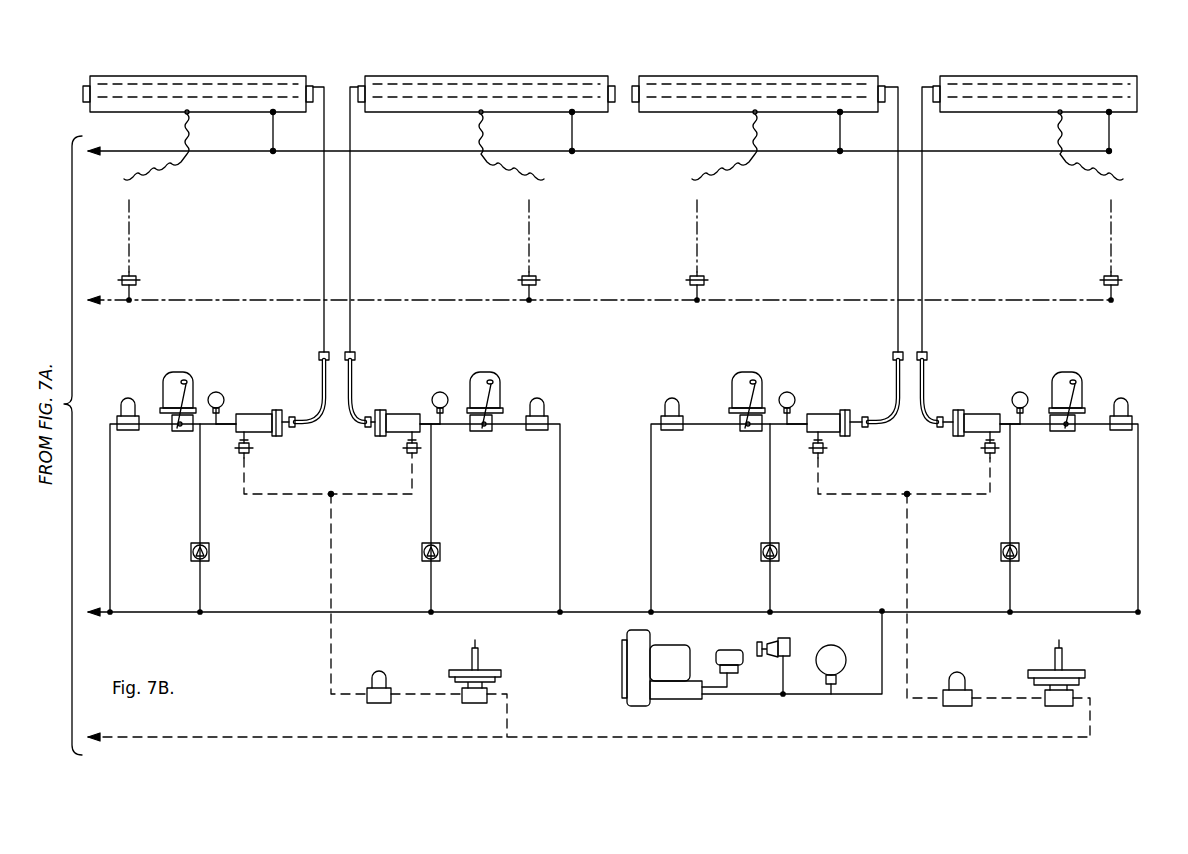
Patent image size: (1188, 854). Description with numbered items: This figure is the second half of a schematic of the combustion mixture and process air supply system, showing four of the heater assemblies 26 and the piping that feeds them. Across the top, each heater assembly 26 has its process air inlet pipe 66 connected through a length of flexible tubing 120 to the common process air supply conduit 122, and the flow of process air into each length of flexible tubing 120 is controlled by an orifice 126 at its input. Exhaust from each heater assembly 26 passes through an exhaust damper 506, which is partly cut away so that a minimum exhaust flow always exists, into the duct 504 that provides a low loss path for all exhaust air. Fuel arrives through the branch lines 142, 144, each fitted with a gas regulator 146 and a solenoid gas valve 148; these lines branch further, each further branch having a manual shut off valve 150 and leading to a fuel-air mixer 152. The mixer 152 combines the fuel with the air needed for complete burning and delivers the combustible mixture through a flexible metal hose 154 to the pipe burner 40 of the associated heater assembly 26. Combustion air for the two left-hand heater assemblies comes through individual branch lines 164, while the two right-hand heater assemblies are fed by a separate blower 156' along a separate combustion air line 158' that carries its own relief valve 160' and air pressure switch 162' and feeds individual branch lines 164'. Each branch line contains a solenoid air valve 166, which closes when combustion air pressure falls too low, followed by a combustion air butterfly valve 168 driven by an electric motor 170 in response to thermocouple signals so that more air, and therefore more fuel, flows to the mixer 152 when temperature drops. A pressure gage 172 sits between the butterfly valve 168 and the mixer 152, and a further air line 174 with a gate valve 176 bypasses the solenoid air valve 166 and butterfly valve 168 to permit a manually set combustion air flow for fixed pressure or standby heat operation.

The heater assembly 26 is at (246, 76).
The pipe burner 40 is at (360, 80).
The process air inlet pipe 66 is at (187, 113).
The exhaust damper 506 is at (273, 130).
The duct 504 is at (305, 155).
The flexible tubing 120 is at (172, 178).
The orifice 126 is at (137, 280).
The process air supply conduit 122 is at (292, 300).
The flexible metal hose 154 is at (360, 420).
The fuel-air mixer 152 is at (254, 413).
The manual shut off valve 150 is at (250, 451).
The branch line 142 is at (507, 712).
The branch line 144 is at (1090, 720).
The branch line 164 is at (614, 519).
The branch line 164' is at (894, 502).
The air line 174 is at (201, 519).
The gate valve 176 is at (210, 554).
The solenoid air valve 166 is at (122, 402).
The electric motor 170 is at (179, 372).
The combustion air butterfly valve 168 is at (180, 431).
The pressure gage 172 is at (216, 392).
The solenoid gas valve 148 is at (379, 672).
The gas regulator 146 is at (480, 668).
The blower 156' is at (667, 681).
The combustion air line 158' is at (793, 667).
The relief valve 160' is at (746, 655).
The air pressure switch 162' is at (826, 654).